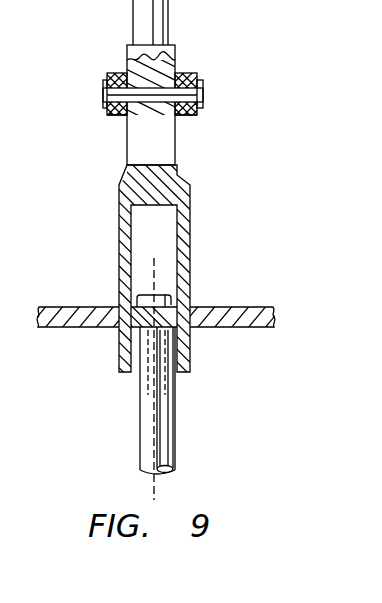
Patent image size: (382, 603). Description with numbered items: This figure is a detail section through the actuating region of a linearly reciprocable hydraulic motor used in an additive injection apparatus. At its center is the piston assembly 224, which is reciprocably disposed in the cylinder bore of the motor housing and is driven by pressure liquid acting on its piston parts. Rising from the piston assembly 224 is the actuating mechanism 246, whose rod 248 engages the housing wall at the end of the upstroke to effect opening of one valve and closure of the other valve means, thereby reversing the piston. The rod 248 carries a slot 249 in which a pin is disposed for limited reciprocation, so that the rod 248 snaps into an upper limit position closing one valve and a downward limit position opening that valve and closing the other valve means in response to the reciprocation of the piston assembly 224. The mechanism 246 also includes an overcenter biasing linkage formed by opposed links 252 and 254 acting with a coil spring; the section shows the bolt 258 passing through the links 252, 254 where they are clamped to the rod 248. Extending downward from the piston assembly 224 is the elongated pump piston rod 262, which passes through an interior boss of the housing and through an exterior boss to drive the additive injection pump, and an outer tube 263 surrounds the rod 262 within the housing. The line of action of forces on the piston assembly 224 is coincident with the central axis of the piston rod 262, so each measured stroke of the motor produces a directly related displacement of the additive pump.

The piston assembly 224 is at (256, 334).
The actuating mechanism 246 is at (103, 118).
The rod 248 is at (168, 20).
The slot 249 is at (167, 158).
The link 252 is at (110, 72).
The link 254 is at (124, 120).
The bolt 258 is at (203, 95).
The pump piston rod 262 is at (175, 440).
The outer tube 263 is at (157, 424).